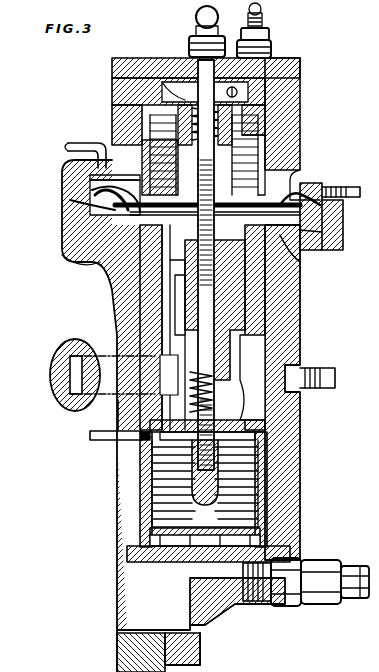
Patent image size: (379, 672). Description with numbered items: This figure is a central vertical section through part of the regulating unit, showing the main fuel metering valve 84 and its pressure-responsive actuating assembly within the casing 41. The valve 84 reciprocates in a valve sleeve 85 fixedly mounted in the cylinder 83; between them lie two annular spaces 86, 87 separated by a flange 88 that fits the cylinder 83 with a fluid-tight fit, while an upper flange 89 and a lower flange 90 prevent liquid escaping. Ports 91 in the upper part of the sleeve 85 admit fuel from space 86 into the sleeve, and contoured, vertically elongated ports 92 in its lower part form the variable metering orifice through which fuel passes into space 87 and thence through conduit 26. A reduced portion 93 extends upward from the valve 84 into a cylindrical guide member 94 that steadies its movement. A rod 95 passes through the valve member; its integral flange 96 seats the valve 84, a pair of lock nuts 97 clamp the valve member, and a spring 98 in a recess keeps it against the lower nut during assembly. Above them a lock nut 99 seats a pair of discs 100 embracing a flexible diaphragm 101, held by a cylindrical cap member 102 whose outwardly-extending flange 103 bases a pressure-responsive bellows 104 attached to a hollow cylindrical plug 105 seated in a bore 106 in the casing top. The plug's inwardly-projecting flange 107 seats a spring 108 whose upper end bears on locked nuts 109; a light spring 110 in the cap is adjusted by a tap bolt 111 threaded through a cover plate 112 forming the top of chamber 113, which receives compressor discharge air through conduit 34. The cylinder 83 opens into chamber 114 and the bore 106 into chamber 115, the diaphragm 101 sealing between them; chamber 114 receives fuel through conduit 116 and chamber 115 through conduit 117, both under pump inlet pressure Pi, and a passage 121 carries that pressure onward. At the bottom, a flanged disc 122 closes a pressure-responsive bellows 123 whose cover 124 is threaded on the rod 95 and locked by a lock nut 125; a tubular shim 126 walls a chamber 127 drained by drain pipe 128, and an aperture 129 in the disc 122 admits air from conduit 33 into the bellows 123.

The tap bolt 111 is at (190, 52).
The conduit 34 is at (272, 12).
The chamber 113 is at (112, 70).
The light spring 110 is at (112, 88).
The cover plate 112 is at (300, 70).
The spring 108 is at (112, 117).
The pressure-responsive bellows 104 is at (112, 132).
The locked nuts 109 is at (268, 120).
The hollow cylindrical plug 105 is at (268, 133).
The cylindrical cap member 102 is at (290, 153).
The chamber 115 is at (300, 175).
The conduit 117 is at (68, 148).
The casing 41 is at (70, 230).
The bore 106 is at (88, 178).
The outwardly-extending flange 103 is at (90, 190).
The pump inlet pressure Pi is at (80, 203).
The flexible diaphragm 101 is at (92, 212).
The inwardly-projecting flange 107 is at (162, 210).
The lock nut 99 is at (225, 220).
The discs 100 is at (278, 210).
The upper flange 89 is at (75, 255).
The valve sleeve 85 is at (335, 241).
The passage 121 is at (350, 198).
The chamber 114 is at (305, 250).
The conduit 116 is at (286, 280).
The lock nuts 97 is at (150, 280).
The cylindrical guide member 94 is at (165, 300).
The ports 91 is at (150, 300).
The flange 88 is at (176, 310).
The ports 92 is at (165, 370).
The annular space 86 is at (258, 300).
The rod 95 is at (232, 320).
The reduced portion 93 is at (266, 275).
The cylinder 83 is at (282, 330).
The spring 98 is at (222, 372).
The conduit 26 is at (322, 376).
The annular space 87 is at (258, 395).
The lower flange 90 is at (270, 428).
The lock nut 125 is at (258, 436).
The cover 124 is at (268, 462).
The pressure-responsive bellows 123 is at (145, 475).
The chamber 127 is at (148, 495).
The tubular shim 126 is at (142, 525).
The flanged disc 122 is at (268, 528).
The aperture 129 is at (130, 555).
The flange 96 is at (140, 448).
The drain pipe 128 is at (92, 440).
The main fuel metering valve 84 is at (110, 427).
The conduit 33 is at (356, 600).